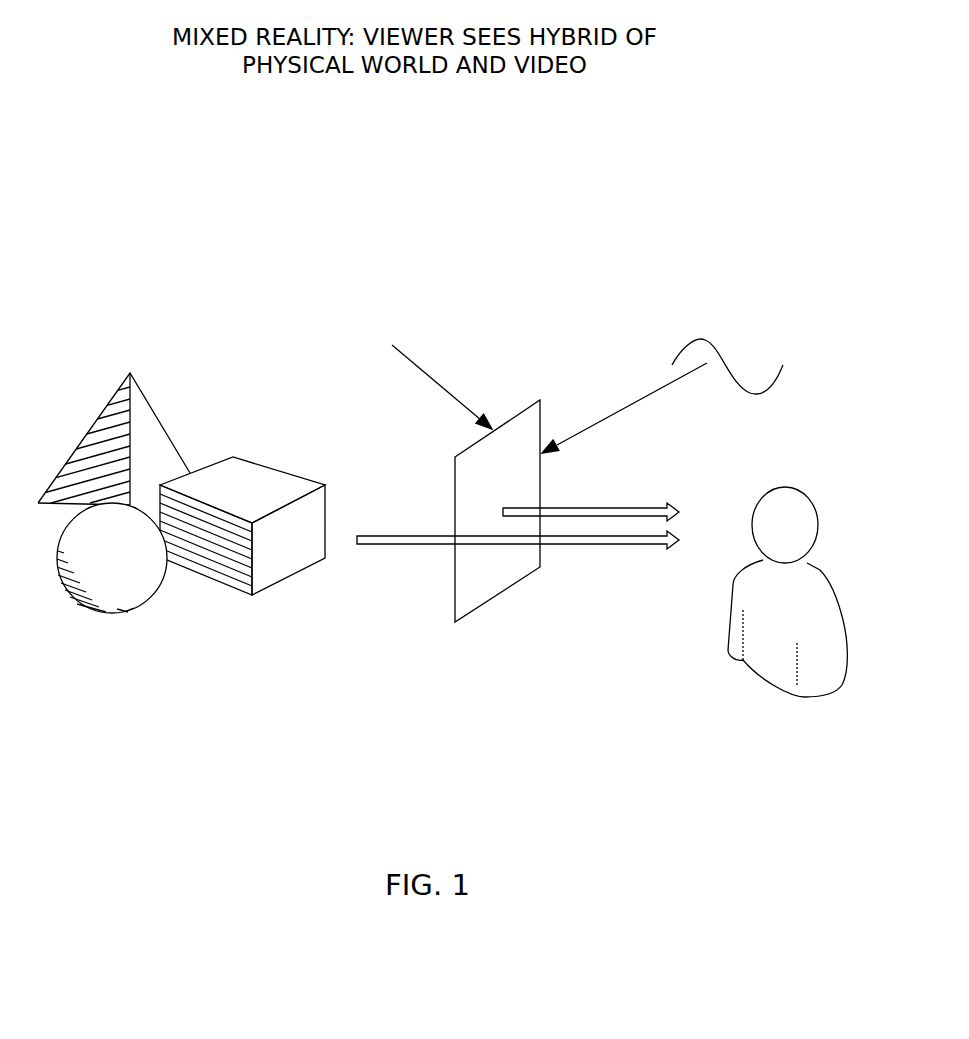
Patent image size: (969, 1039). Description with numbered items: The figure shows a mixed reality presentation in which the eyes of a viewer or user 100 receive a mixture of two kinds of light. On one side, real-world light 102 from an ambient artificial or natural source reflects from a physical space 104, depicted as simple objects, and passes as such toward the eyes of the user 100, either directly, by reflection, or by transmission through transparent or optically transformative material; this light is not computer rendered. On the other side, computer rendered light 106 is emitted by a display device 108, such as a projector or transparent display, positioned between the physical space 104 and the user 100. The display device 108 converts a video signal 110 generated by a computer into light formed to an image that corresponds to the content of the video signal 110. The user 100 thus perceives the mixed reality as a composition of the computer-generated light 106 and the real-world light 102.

The viewer or user 100 is at (815, 753).
The real-world light 102 is at (400, 546).
The physical space 104 is at (152, 698).
The computer rendered light 106 is at (605, 520).
The display device 108 is at (540, 400).
The video signal 110 is at (772, 387).